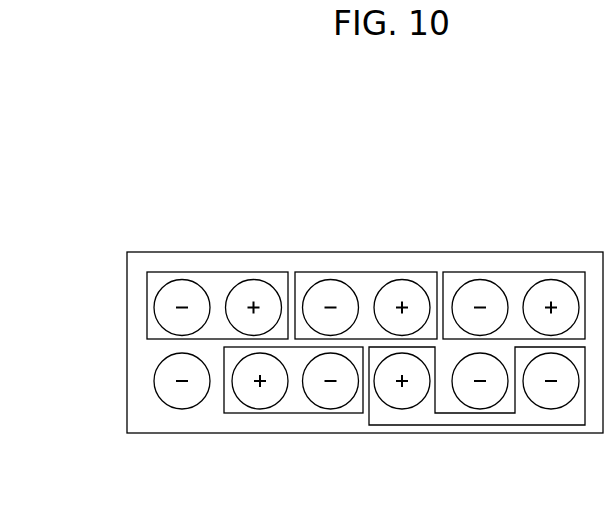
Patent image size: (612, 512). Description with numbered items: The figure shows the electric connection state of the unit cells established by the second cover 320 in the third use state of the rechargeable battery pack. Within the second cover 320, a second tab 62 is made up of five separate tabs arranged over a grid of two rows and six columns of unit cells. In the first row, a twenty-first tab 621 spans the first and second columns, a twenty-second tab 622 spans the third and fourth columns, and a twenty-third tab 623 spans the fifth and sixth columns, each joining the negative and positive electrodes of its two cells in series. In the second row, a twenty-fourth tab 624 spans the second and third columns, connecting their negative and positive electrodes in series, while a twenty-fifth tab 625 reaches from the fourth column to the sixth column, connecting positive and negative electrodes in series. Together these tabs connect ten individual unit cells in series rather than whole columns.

The second cover 320 is at (543, 252).
The second tab 62 is at (53, 265).
The twenty-first tab 621 is at (215, 272).
The twenty-second tab 622 is at (328, 272).
The twenty-third tab 623 is at (477, 272).
The twenty-fourth tab 624 is at (280, 413).
The twenty-fifth tab 625 is at (430, 425).